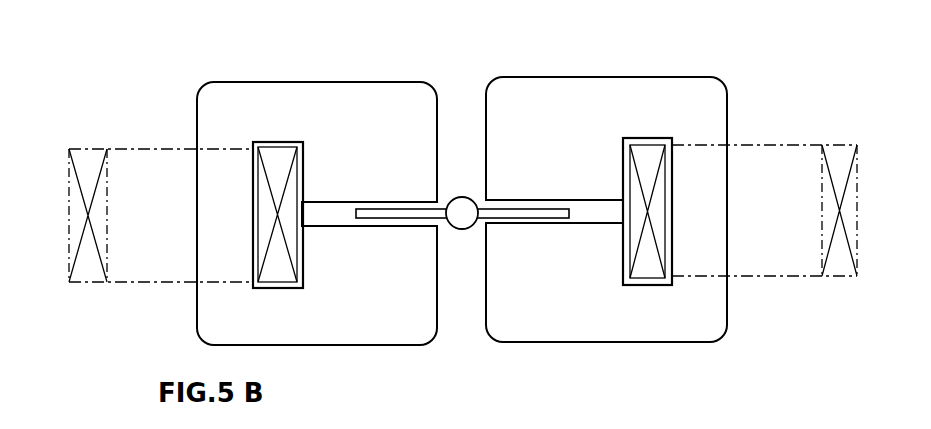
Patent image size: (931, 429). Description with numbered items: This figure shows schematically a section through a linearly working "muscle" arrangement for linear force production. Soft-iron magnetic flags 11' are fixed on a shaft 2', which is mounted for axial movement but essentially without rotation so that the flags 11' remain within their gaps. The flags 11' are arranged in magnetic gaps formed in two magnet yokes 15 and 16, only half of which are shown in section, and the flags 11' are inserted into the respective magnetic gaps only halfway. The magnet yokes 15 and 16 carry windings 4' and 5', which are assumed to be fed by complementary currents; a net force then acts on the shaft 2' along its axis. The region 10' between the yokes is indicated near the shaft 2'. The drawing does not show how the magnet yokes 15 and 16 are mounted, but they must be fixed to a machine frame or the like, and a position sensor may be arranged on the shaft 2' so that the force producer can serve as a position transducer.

The magnet yoke 15 is at (284, 82).
The magnet yoke 16 is at (629, 77).
The winding 4' is at (186, 200).
The winding 5' is at (740, 196).
The air gap 10' is at (461, 179).
The soft-iron magnetic flag 11' is at (462, 231).
The shaft 2' is at (462, 231).